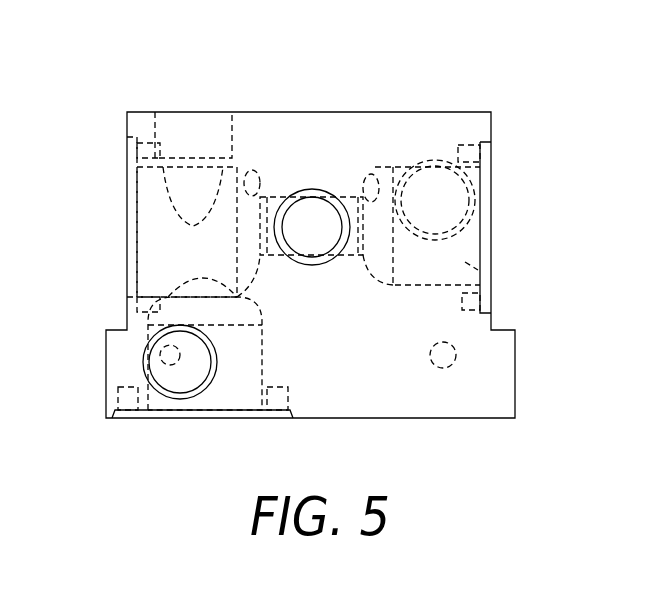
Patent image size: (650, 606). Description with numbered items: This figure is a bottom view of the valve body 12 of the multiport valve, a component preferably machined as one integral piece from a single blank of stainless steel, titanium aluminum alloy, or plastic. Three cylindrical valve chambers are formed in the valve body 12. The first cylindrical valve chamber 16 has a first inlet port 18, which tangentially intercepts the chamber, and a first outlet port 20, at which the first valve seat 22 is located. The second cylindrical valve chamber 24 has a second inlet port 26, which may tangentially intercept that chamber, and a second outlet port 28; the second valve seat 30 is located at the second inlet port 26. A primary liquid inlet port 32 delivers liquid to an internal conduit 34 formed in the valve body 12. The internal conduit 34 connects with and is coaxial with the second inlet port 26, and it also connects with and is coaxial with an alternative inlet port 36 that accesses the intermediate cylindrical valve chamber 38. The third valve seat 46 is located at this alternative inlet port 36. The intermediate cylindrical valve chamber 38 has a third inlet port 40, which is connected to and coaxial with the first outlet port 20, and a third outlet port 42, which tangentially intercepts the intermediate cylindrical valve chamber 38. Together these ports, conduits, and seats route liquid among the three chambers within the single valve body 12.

The valve body 12 is at (352, 86).
The first cylindrical valve chamber 16 is at (243, 367).
The first inlet port 18 is at (148, 357).
The first outlet port 20 is at (299, 257).
The first valve seat 22 is at (168, 297).
The second cylindrical valve chamber 24 is at (502, 272).
The second inlet port 26 is at (363, 247).
The second outlet port 28 is at (455, 204).
The second valve seat 30 is at (375, 173).
The primary liquid inlet port 32 is at (339, 255).
The internal conduit 34 is at (348, 262).
The alternative inlet port 36 is at (262, 246).
The intermediate cylindrical valve chamber 38 is at (153, 204).
The third inlet port 40 is at (198, 280).
The third outlet port 42 is at (198, 130).
The third valve seat 46 is at (255, 172).